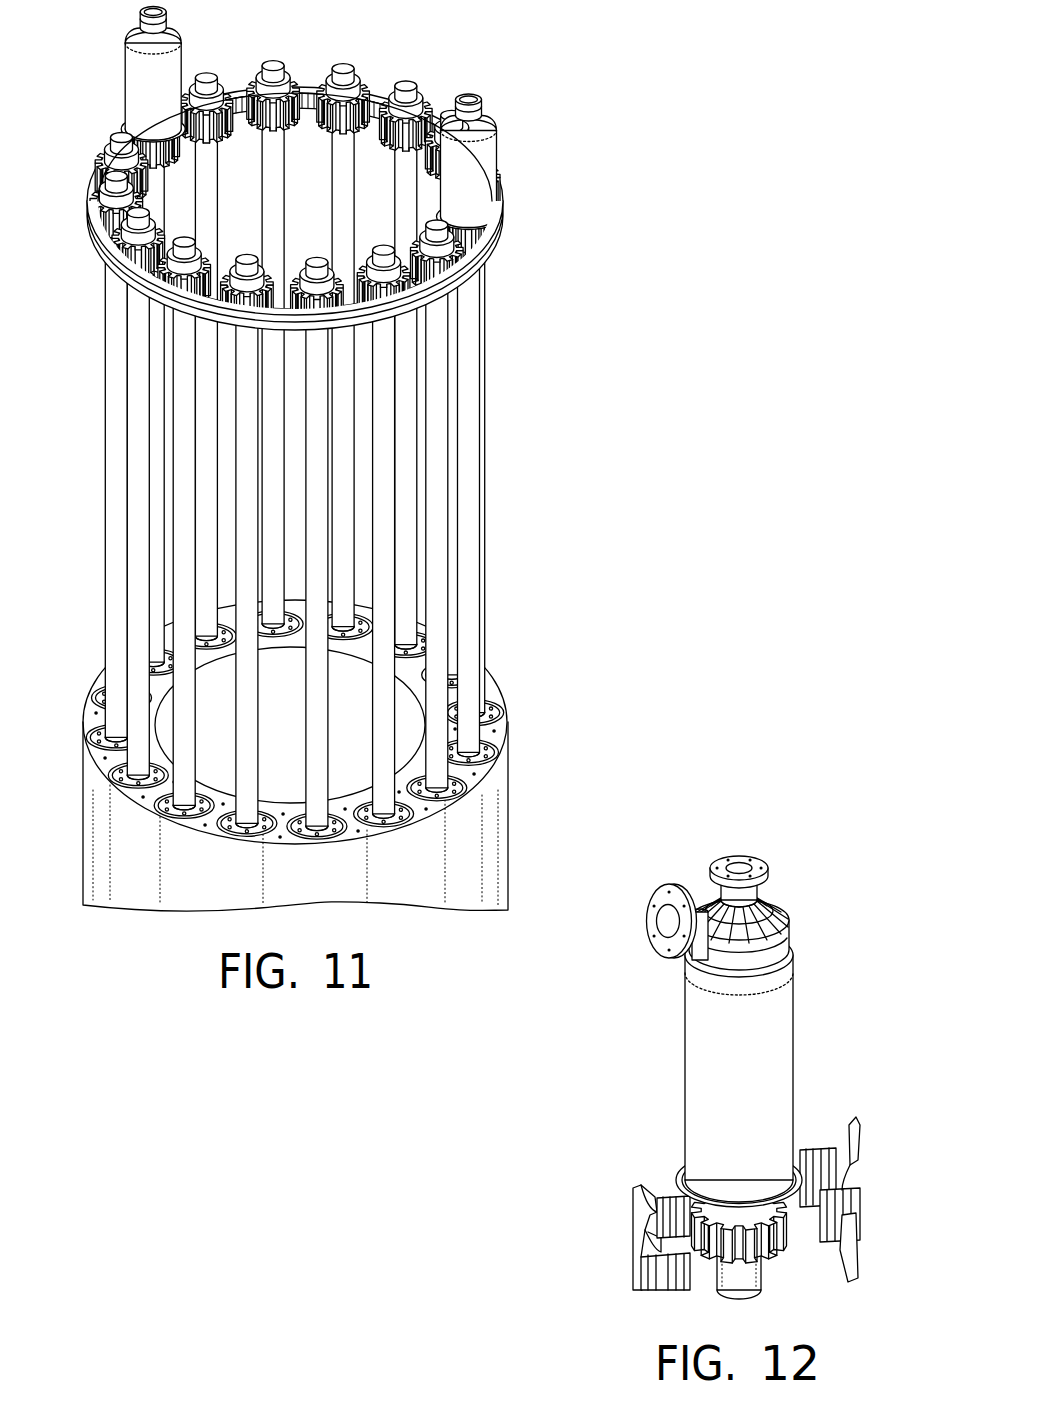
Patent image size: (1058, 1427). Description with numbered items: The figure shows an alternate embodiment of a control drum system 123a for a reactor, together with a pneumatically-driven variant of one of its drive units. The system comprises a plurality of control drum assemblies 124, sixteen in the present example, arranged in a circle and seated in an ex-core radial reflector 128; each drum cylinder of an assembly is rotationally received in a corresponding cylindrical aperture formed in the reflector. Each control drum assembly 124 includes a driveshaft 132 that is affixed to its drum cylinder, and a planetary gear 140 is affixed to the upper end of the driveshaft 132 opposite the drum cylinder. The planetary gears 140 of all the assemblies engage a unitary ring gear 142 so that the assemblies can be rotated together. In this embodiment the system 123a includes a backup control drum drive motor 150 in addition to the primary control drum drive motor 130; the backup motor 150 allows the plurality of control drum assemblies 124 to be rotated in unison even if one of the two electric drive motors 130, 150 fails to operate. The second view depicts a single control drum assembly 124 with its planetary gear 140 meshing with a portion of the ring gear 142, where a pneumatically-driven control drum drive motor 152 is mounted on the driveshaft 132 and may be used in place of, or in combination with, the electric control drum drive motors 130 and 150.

In FIG. 11, the control drum system 123a is at (369, 459).
In FIG. 11, the control drum assembly 124 is at (502, 506).
In FIG. 11, the ex-core radial reflector 128 is at (508, 812).
In FIG. 11, the primary control drum drive motor 130 is at (488, 148).
In FIG. 12, the driveshaft 132 is at (633, 1188).
In FIG. 11, the planetary gear 140 is at (297, 104).
In FIG. 12, the planetary gear 140 is at (795, 1259).
In FIG. 11, the ring gear 142 is at (142, 282).
In FIG. 12, the ring gear 142 is at (808, 1148).
In FIG. 11, the backup control drum drive motor 150 is at (176, 66).
In FIG. 12, the pneumatically-driven control drum drive motor 152 is at (760, 860).